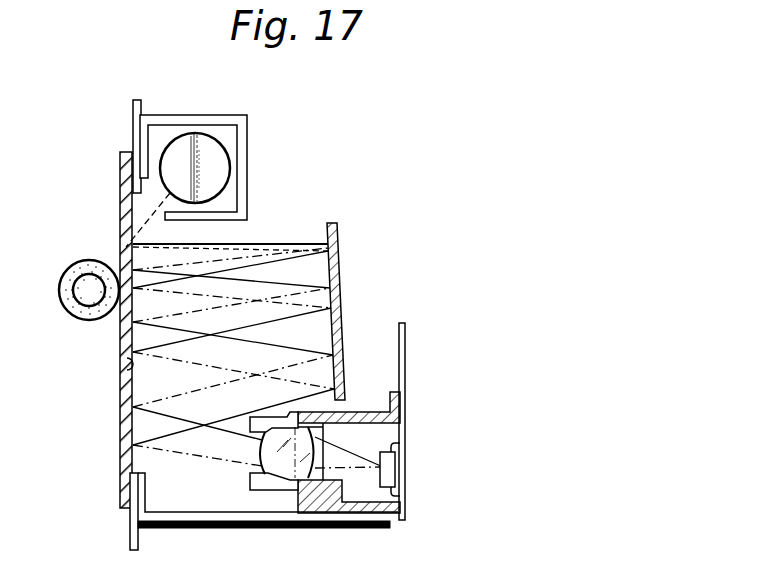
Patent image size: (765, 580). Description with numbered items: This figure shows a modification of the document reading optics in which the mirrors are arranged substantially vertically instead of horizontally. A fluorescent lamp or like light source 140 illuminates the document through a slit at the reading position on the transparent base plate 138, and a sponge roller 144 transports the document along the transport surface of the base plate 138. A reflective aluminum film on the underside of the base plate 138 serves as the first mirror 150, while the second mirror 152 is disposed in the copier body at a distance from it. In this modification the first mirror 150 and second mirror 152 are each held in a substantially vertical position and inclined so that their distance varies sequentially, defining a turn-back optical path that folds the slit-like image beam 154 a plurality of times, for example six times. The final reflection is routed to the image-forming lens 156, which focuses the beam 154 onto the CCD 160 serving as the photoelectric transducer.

The base plate 138 is at (123, 420).
The light source 140 is at (226, 152).
The sponge roller 144 is at (76, 261).
The first mirror 150 is at (121, 363).
The second mirror 152 is at (340, 268).
The beam 154 is at (280, 298).
The image-forming lens 156 is at (285, 479).
The CCD 160 is at (395, 457).